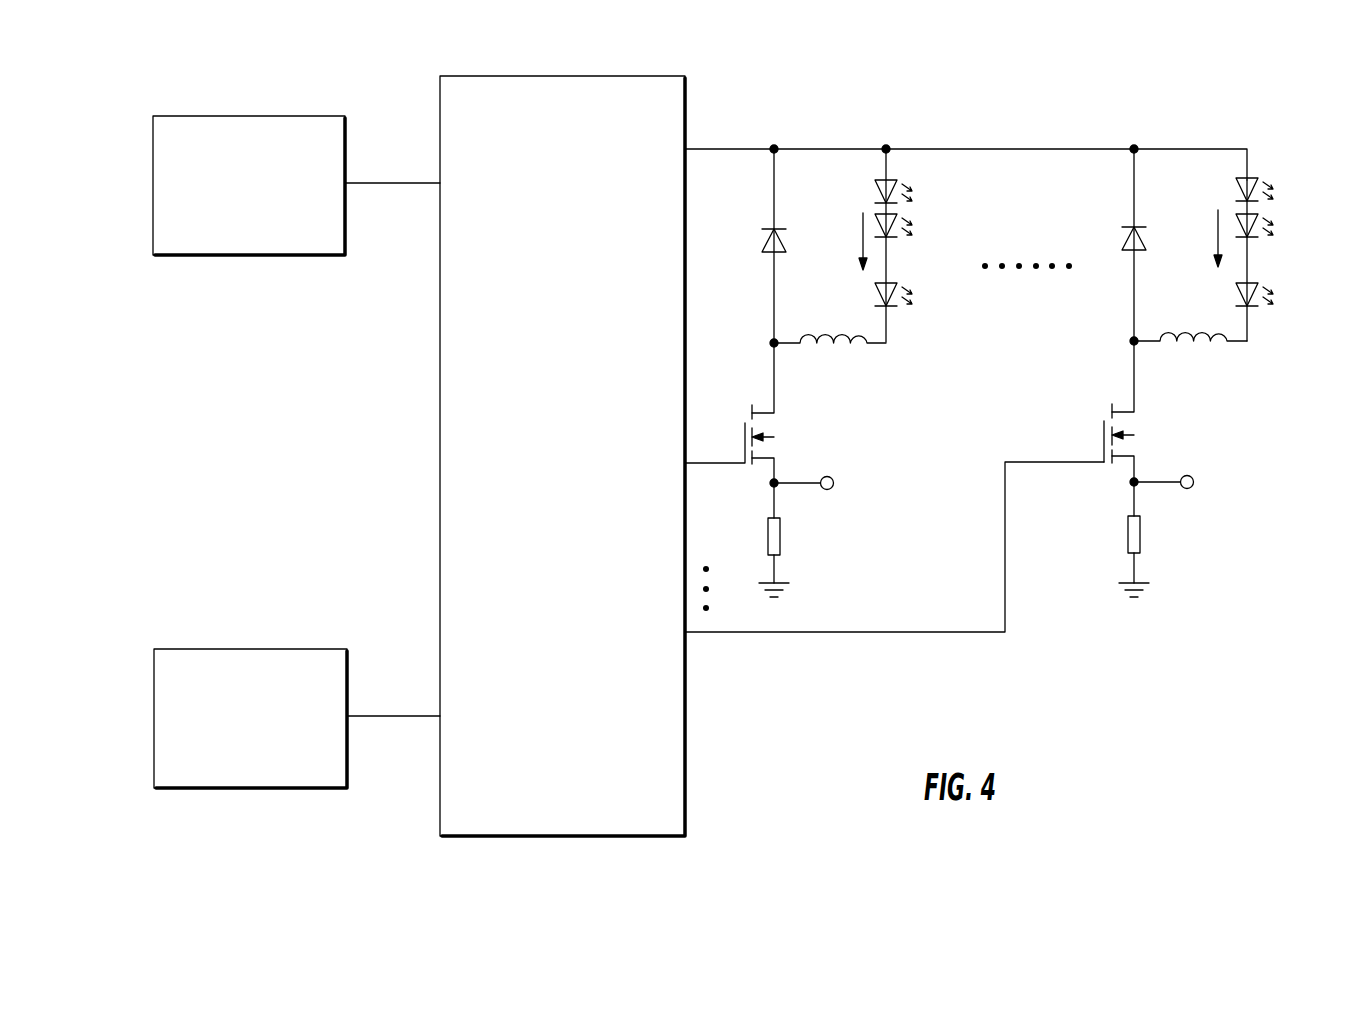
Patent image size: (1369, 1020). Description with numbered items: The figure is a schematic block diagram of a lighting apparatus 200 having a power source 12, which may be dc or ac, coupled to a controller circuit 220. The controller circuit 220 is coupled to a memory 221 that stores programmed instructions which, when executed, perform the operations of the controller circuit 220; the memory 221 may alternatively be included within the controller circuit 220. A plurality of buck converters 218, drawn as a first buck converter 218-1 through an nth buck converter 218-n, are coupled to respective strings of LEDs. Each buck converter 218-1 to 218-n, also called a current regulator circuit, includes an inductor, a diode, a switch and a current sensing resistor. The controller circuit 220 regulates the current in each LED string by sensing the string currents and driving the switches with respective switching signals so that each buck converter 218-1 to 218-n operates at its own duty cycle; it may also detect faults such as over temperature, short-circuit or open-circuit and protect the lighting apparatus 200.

The power source 12 is at (262, 225).
The controller circuit 220 is at (579, 502).
The memory 221 is at (268, 756).
The lighting apparatus 200 is at (1196, 107).
The buck converter 218 is at (886, 140).
The first buck converter 218-1 is at (840, 350).
The nth buck converter 218-n is at (1198, 350).